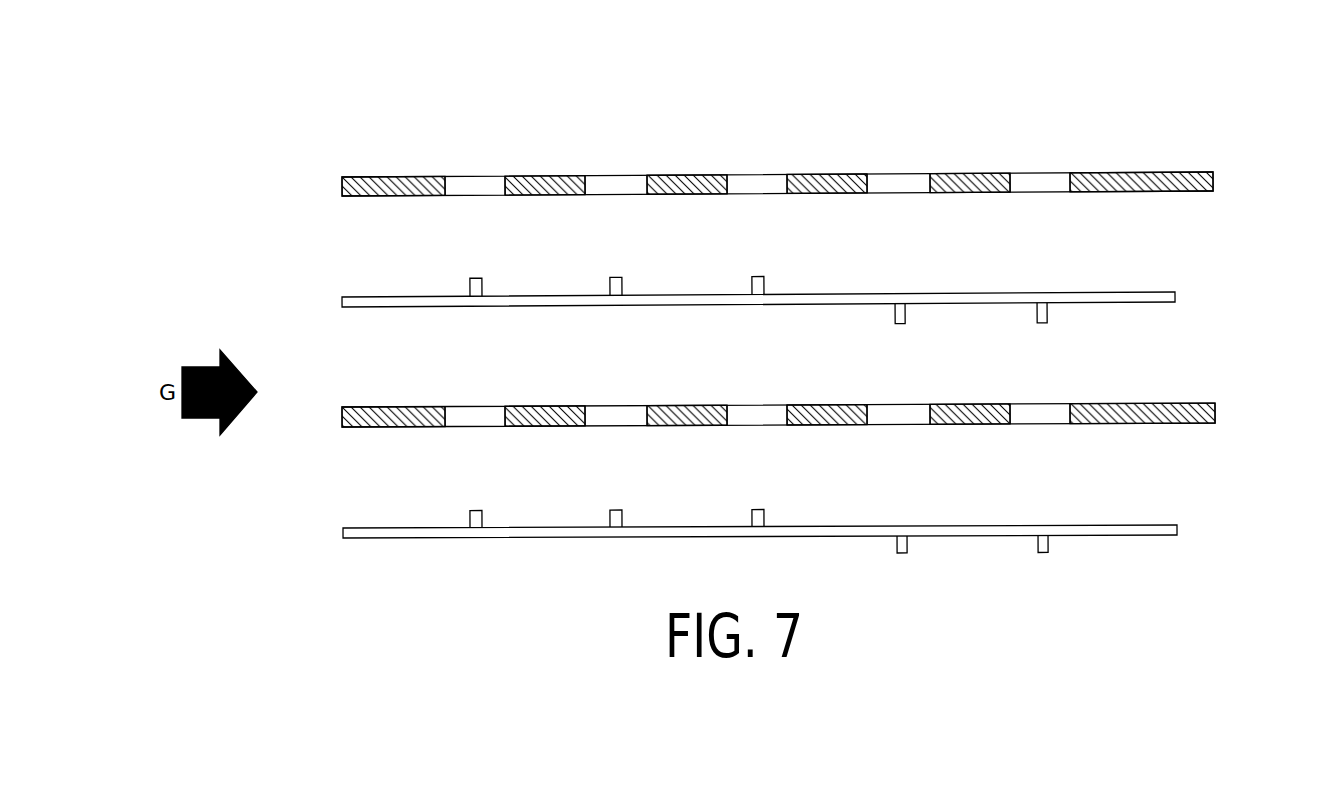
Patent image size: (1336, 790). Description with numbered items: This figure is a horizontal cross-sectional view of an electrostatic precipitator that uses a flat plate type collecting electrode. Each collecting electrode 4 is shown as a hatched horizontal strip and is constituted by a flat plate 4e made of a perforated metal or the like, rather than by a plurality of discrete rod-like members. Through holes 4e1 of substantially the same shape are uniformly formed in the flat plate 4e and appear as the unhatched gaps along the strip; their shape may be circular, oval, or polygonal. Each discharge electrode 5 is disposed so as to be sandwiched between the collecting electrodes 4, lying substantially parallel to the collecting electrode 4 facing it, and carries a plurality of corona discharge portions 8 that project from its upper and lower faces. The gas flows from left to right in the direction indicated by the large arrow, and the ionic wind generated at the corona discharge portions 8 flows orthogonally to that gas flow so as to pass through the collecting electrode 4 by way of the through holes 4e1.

The collecting electrode 4 is at (828, 257).
The flat plate 4e is at (777, 184).
The through hole 4e1 is at (757, 184).
The discharge electrode 5 is at (802, 377).
The corona discharge portion 8 is at (758, 300).